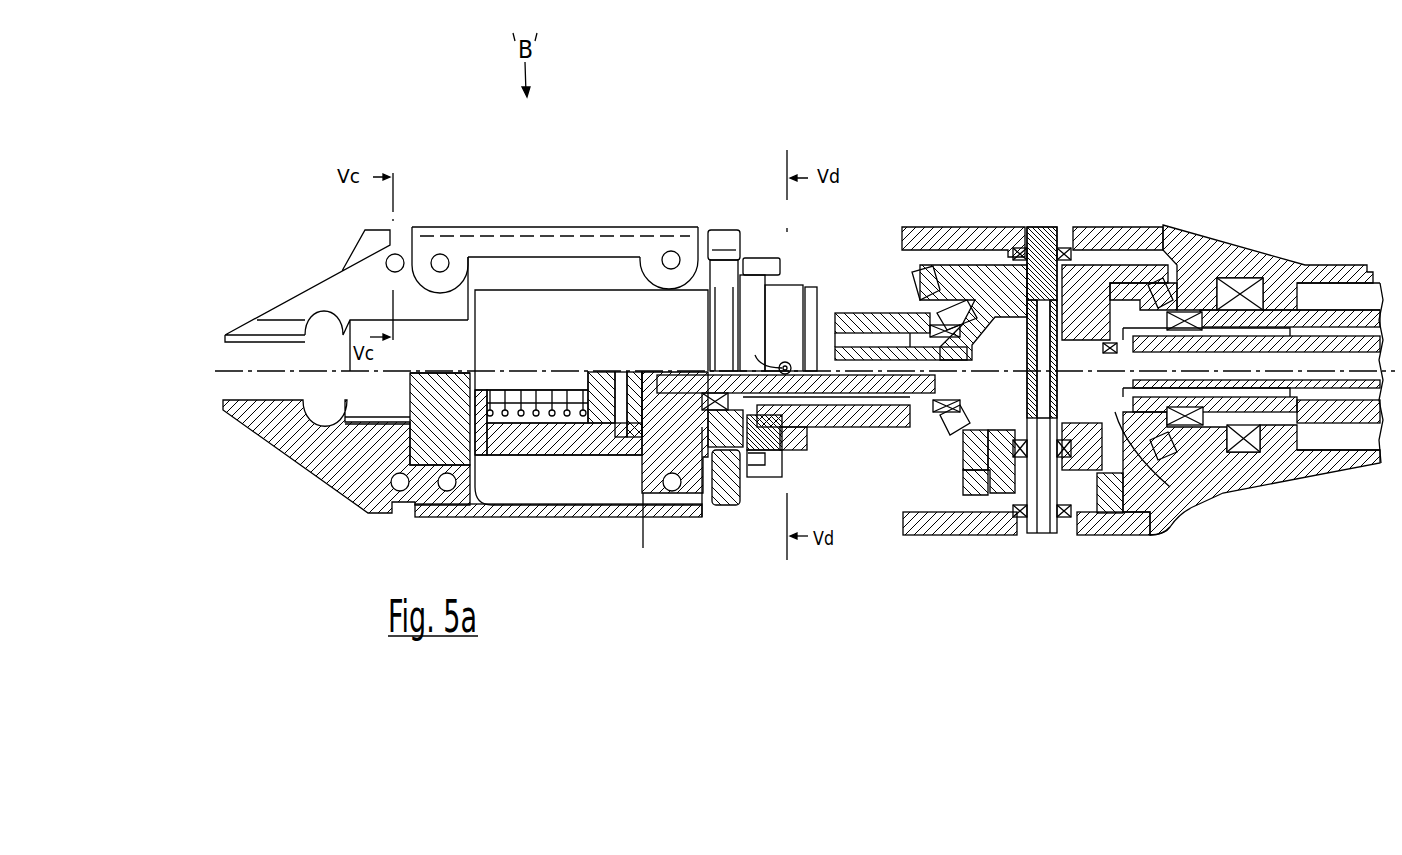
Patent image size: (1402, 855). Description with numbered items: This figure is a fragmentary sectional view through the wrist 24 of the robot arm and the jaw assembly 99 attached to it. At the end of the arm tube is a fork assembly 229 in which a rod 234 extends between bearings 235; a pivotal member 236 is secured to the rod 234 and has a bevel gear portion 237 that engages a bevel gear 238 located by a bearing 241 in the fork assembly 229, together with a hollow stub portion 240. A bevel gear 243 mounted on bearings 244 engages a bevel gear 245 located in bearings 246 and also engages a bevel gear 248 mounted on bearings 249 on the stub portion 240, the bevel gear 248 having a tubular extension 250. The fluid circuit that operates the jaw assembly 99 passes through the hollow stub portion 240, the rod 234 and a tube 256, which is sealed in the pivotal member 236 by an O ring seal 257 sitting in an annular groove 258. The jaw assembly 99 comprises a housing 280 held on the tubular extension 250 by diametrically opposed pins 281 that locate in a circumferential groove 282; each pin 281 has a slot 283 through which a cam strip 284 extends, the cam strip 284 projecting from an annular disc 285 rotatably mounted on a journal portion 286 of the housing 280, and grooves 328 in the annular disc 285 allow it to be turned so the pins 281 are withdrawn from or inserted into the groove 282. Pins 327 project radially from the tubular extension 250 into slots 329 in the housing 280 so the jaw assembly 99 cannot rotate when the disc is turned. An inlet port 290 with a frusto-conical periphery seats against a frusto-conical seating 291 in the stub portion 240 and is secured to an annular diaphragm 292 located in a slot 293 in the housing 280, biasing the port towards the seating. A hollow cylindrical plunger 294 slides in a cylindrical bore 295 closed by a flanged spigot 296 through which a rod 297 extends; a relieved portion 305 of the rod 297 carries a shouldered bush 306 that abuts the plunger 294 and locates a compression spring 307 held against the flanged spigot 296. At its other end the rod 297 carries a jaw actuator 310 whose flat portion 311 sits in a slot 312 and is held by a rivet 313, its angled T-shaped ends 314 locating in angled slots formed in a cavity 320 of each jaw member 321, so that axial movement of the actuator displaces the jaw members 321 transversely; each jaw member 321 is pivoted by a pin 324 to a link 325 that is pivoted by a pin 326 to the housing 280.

The wrist 24 is at (1298, 474).
The jaw assembly 99 is at (484, 185).
The fork assembly 229 is at (1010, 240).
The rod 234 is at (1041, 523).
The bearings 235 is at (1063, 250).
The pivotal member 236 is at (978, 285).
The bevel gear portion 237 is at (912, 272).
The bevel gear 238 is at (1186, 285).
The hollow stub portion 240 is at (882, 312).
The bearing 241 is at (1243, 292).
The bevel gear 243 is at (972, 462).
The bearings 244 is at (1096, 470).
The bevel gear 245 is at (1172, 503).
The bearings 246 is at (1218, 462).
The bevel gear 248 is at (965, 440).
The bearings 249 is at (948, 425).
The tubular extension 250 is at (830, 420).
The tube 256 is at (1243, 472).
The O ring seal 257 is at (1127, 442).
The annular groove 258 is at (1112, 345).
The housing 280 is at (672, 492).
The pins 281 is at (780, 268).
The circumferential groove 282 is at (748, 420).
The slot 283 is at (800, 258).
The cam strip 284 is at (722, 304).
The annular disc 285 is at (719, 232).
The journal portion 286 is at (660, 573).
The inlet port 290 is at (666, 390).
The frusto-conical seating 291 is at (604, 438).
The annular diaphragm 292 is at (598, 442).
The slot 293 is at (650, 470).
The hollow cylindrical plunger 294 is at (566, 440).
The cylindrical bore 295 is at (532, 440).
The flanged spigot 296 is at (483, 428).
The rod 297 is at (559, 395).
The relieved portion 305 is at (603, 390).
The shouldered bush 306 is at (617, 390).
The compression spring 307 is at (538, 392).
The jaw actuator 310 is at (405, 412).
The flat portion 311 is at (405, 428).
The slot 312 is at (410, 380).
The rivet 313 is at (440, 375).
The angled T-shaped ends 314 is at (400, 462).
The cavity 320 is at (490, 497).
The jaw member 321 is at (272, 297).
The pin 324 is at (441, 255).
The link 325 is at (500, 227).
The pin 326 is at (671, 250).
The pins 327 is at (808, 362).
The grooves 328 is at (742, 236).
The slots 329 is at (766, 362).